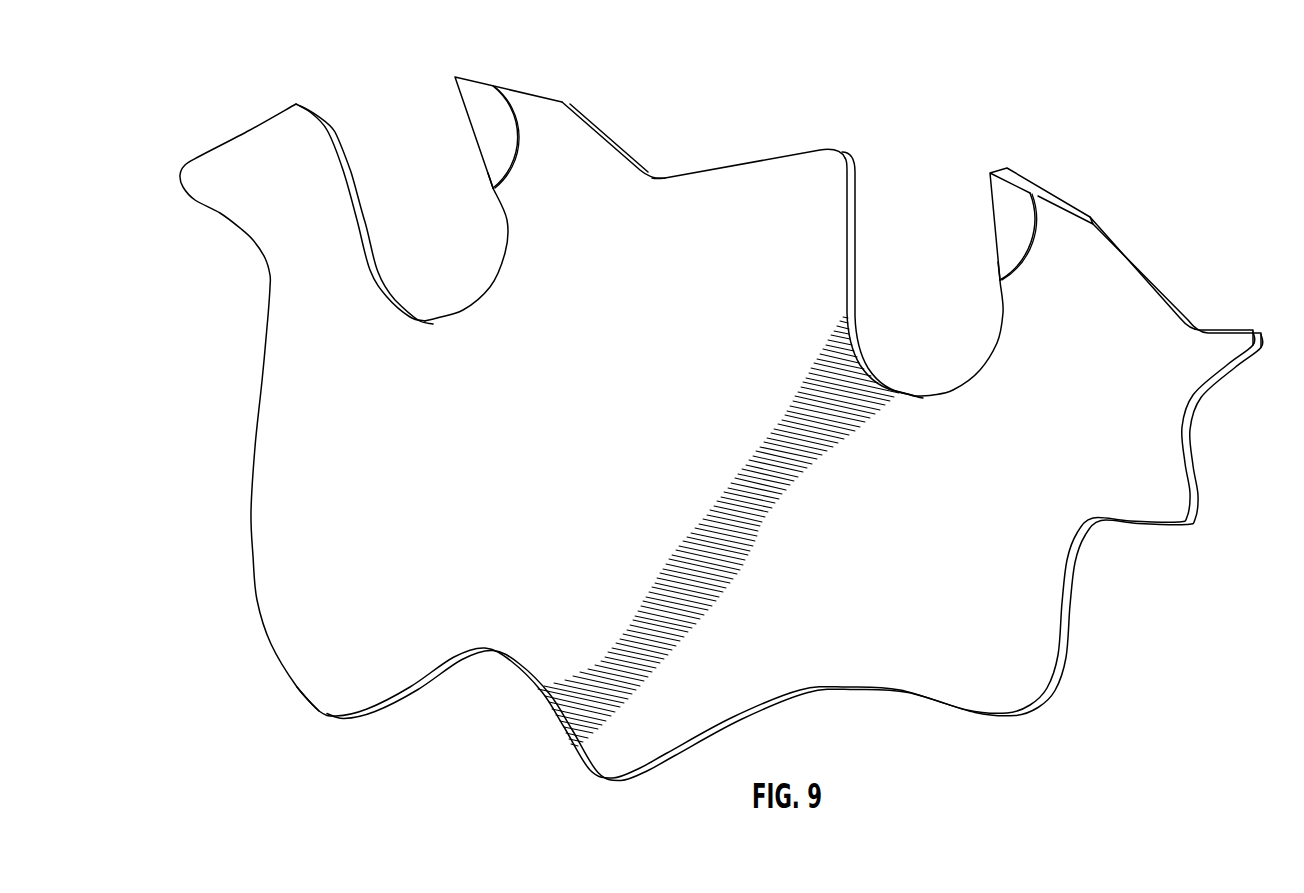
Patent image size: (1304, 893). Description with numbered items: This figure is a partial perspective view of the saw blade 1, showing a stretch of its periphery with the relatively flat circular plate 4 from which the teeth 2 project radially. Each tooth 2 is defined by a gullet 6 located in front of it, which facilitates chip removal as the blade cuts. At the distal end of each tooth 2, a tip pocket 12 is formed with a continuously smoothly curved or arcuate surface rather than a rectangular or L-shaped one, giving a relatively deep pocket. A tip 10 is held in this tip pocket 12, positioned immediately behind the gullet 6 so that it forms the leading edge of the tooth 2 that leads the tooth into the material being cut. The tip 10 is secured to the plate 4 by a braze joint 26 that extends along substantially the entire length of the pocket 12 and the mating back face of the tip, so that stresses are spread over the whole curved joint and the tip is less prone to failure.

The saw blade 1 is at (1132, 127).
The tooth 2 is at (563, 137).
The plate 4 is at (1157, 483).
The gullet 6 is at (440, 313).
The tip 10 is at (466, 70).
The tip pocket 12 is at (492, 190).
The braze joint 26 is at (513, 108).